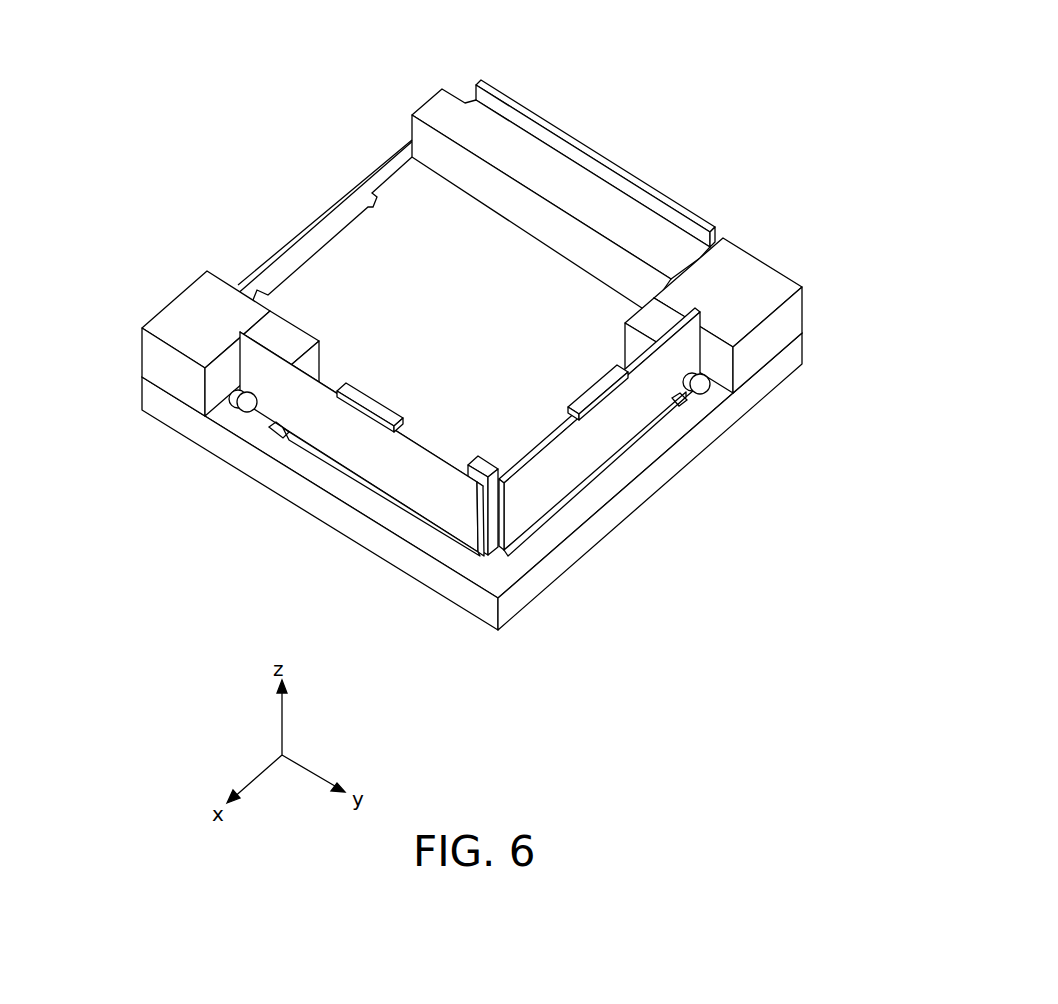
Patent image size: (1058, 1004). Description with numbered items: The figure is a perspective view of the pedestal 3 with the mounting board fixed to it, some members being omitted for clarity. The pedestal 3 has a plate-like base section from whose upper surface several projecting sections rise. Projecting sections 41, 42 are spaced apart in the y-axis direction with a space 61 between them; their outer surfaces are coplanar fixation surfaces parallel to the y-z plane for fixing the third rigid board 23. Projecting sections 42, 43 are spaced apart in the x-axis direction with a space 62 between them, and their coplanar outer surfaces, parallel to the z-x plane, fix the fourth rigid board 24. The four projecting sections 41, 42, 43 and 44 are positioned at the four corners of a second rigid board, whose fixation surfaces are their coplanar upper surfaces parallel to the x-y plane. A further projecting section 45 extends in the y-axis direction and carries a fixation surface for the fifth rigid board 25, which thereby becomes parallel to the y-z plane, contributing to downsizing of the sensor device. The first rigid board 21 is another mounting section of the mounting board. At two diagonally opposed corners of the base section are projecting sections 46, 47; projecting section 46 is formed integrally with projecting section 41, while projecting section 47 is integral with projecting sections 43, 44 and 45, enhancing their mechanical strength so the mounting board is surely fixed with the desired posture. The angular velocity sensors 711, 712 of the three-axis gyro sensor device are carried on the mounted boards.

The pedestal 3 is at (388, 130).
The first rigid board 21 is at (363, 250).
The third rigid board 23 is at (318, 427).
The fourth rigid board 24 is at (610, 447).
The fifth rigid board 25 is at (612, 152).
The projecting section 41 is at (293, 340).
The projecting section 42 is at (478, 460).
The projecting section 43 is at (663, 320).
The projecting section 44 is at (440, 102).
The projecting section 45 is at (548, 167).
The projecting section 46 is at (188, 315).
The projecting section 47 is at (784, 305).
The space 61 is at (380, 400).
The space 62 is at (600, 400).
The angular velocity sensor 711 is at (370, 413).
The angular velocity sensor 712 is at (617, 402).